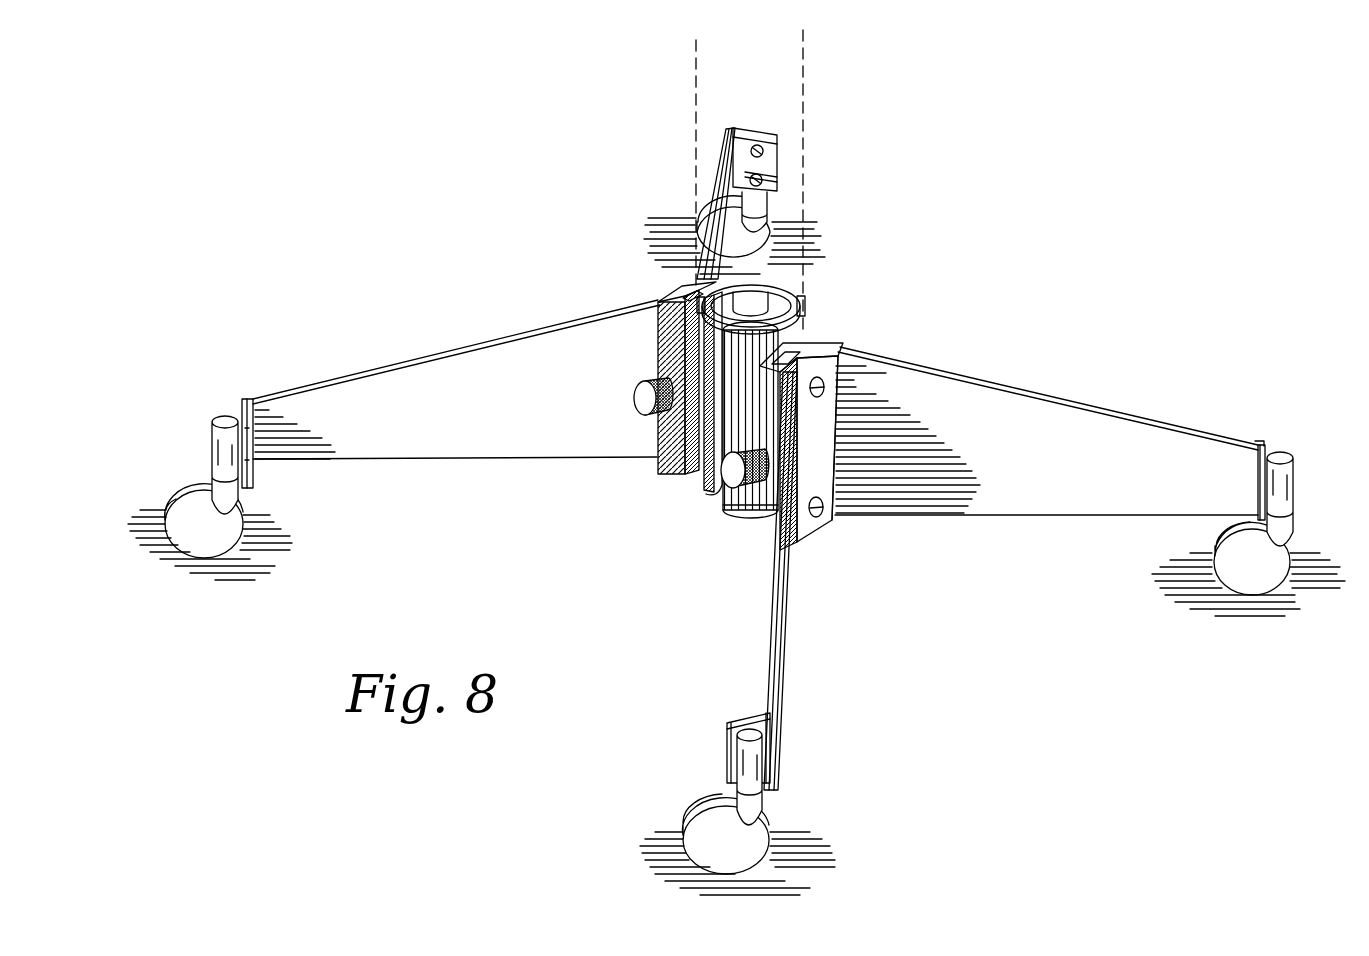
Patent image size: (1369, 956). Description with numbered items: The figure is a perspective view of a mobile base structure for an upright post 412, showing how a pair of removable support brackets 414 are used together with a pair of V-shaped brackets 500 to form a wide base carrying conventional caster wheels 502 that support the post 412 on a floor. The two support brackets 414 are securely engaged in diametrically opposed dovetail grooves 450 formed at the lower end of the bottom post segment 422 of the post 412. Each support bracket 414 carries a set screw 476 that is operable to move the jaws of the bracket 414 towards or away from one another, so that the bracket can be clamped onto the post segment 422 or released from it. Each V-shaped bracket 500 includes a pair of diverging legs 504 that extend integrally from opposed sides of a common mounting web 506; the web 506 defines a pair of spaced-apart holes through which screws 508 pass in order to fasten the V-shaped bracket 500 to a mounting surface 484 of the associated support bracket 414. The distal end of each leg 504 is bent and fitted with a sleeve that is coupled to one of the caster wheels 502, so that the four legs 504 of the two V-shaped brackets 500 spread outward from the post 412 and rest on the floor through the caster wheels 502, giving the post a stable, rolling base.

The post 412 is at (810, 300).
The removable support bracket 414 is at (842, 340).
The bottom post segment 422 is at (735, 490).
The dovetail groove 450 is at (720, 372).
The set screw 476 is at (748, 462).
The mounting surface 484 is at (772, 505).
The V-shaped bracket 500 is at (509, 332).
The caster wheel 502 is at (762, 240).
The diverging leg 504 is at (726, 167).
The common mounting web 506 is at (690, 292).
The screw 508 is at (830, 388).